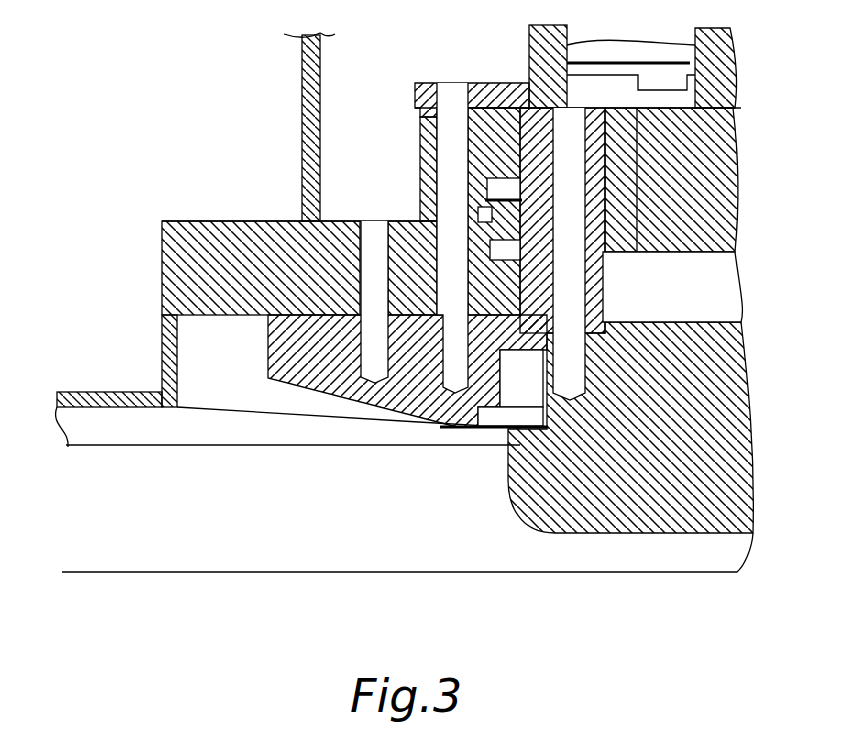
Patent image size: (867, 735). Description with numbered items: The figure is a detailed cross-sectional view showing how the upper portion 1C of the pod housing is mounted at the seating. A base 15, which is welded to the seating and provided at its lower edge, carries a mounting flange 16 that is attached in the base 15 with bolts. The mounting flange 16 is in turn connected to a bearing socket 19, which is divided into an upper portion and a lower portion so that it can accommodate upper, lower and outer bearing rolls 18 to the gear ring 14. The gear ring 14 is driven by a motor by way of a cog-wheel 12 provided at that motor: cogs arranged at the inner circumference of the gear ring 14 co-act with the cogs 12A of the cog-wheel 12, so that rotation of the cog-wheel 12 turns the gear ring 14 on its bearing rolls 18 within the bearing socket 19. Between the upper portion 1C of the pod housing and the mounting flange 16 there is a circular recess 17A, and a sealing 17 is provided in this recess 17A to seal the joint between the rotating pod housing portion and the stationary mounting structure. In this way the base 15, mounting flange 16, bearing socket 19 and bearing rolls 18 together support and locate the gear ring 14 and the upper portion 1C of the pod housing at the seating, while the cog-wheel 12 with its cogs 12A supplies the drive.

The upper portion of the pod housing 1C is at (694, 397).
The cog-wheel 12 is at (695, 136).
The cogs of the cog-wheel 12A is at (640, 207).
The gear ring 14 is at (617, 256).
The base 15 is at (185, 273).
The mounting flange 16 is at (385, 390).
The sealing 17 is at (495, 428).
The circular recess 17A is at (548, 418).
The bearing rolls 18 is at (497, 245).
The bearing socket 19 is at (488, 110).